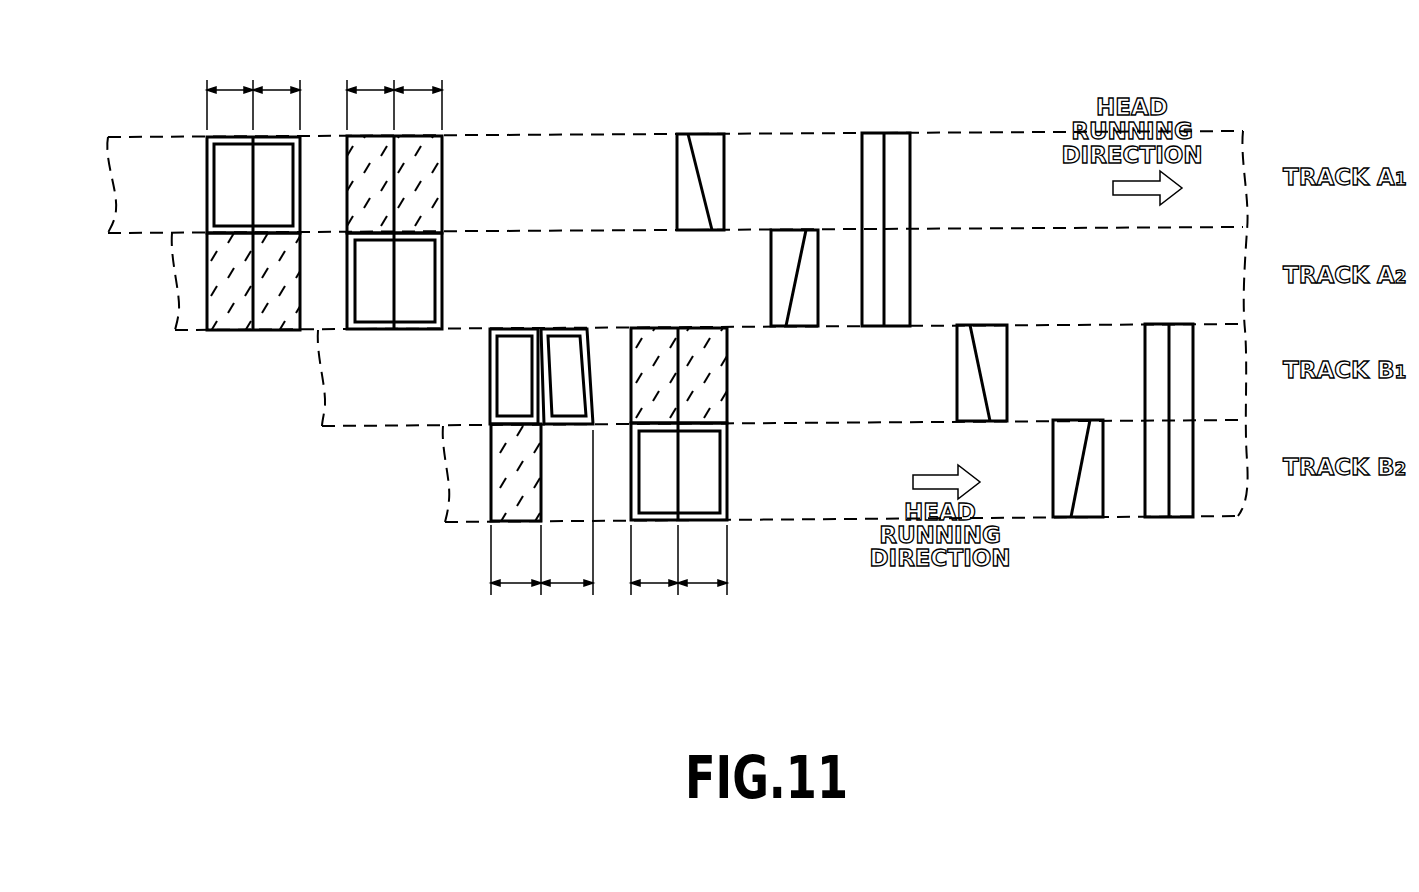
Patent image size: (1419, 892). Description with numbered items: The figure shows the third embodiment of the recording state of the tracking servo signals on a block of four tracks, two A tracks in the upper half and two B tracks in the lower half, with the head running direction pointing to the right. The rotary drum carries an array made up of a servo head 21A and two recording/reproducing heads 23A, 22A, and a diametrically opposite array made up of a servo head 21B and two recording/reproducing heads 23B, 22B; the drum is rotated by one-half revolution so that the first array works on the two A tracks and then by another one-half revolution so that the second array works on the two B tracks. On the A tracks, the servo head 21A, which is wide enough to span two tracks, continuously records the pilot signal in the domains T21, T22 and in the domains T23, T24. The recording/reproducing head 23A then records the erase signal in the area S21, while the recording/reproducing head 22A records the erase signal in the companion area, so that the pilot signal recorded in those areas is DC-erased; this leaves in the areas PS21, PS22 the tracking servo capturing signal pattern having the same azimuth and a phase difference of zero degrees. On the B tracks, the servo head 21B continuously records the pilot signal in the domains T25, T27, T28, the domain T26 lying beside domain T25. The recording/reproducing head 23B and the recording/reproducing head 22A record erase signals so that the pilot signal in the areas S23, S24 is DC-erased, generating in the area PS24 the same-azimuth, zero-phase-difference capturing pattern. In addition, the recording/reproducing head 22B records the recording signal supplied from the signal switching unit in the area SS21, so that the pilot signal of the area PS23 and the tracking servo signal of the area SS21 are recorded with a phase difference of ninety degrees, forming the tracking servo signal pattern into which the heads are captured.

The area of tracking servo capturing signal pattern PS21 is at (232, 162).
The area of tracking servo capturing signal pattern PS22 is at (427, 165).
The pilot signal area PS23 is at (508, 365).
The area of tracking servo capturing signal pattern PS24 is at (695, 480).
The tracking servo signal area SS21 is at (563, 368).
The DC-erased area S21 is at (270, 323).
The DC-erased area S23 is at (502, 483).
The DC-erased area S24 is at (710, 395).
The domain T21 is at (230, 92).
The domain T22 is at (276, 92).
The domain T23 is at (370, 92).
The domain T24 is at (418, 92).
The domain T25 is at (516, 574).
The domain T26 is at (567, 526).
The domain T27 is at (654, 572).
The domain T28 is at (702, 572).
The servo head 21A is at (870, 145).
The recording/reproducing head 22A is at (707, 145).
The recording/reproducing head 23A is at (787, 243).
The servo head 21B is at (1157, 503).
The recording/reproducing head 22B is at (986, 335).
The recording/reproducing head 23B is at (1084, 508).